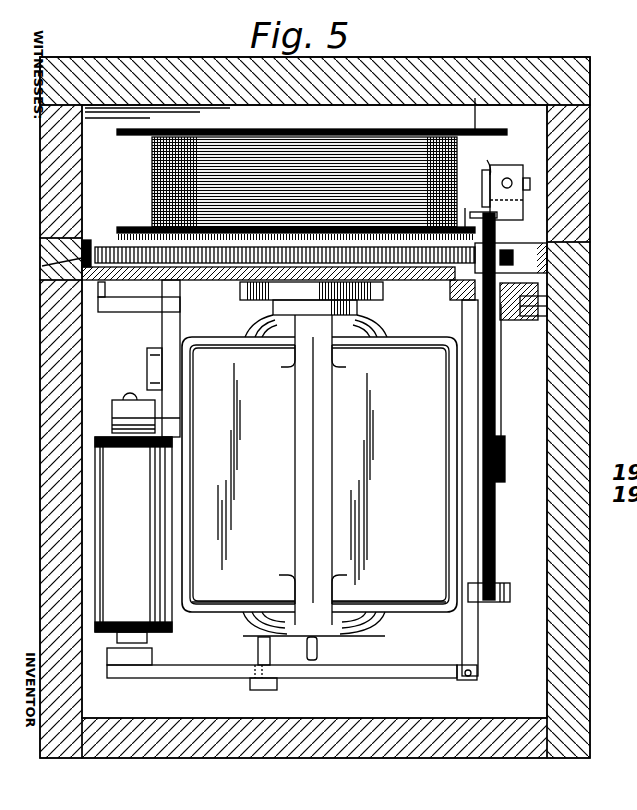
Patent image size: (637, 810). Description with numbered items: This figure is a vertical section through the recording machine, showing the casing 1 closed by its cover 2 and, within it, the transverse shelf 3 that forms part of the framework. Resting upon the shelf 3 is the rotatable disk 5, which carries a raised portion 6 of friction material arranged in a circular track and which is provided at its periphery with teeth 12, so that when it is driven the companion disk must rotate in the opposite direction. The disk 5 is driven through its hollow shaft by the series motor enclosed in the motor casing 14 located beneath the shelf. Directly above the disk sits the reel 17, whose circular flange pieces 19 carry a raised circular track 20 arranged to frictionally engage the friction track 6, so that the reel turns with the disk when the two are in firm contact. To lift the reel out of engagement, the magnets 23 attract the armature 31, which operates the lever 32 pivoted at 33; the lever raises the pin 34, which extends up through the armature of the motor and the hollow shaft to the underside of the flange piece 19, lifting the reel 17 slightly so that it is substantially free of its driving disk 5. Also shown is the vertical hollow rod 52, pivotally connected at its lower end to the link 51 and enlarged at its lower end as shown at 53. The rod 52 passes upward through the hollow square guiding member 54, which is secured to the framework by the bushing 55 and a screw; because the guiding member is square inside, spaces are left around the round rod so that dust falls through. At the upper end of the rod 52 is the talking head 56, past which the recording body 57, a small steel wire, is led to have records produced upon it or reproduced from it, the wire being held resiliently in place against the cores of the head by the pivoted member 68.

The casing 1 is at (575, 441).
The cover 2 is at (590, 149).
The transverse shelf 3 is at (209, 282).
The rotatable disk 5 is at (229, 282).
The raised portion of friction material 6 is at (150, 238).
The teeth 12 is at (42, 266).
The motor casing 14 is at (319, 474).
The reel 17 is at (292, 134).
The circular flange piece 19 is at (475, 98).
The raised circular track 20 is at (151, 225).
The magnets 23 is at (133, 540).
The armature 31 is at (152, 659).
The lever 32 is at (380, 672).
The pivot 33 is at (468, 681).
The pin 34 is at (318, 648).
The link 51 is at (319, 581).
The hollow rod 52 is at (497, 523).
The enlarged lower end of rod 53 is at (490, 603).
The hollow square guiding member 54 is at (505, 466).
The bushing 55 is at (512, 322).
The talking head 56 is at (507, 168).
The recording body 57 is at (468, 181).
The pivoted member 68 is at (487, 160).